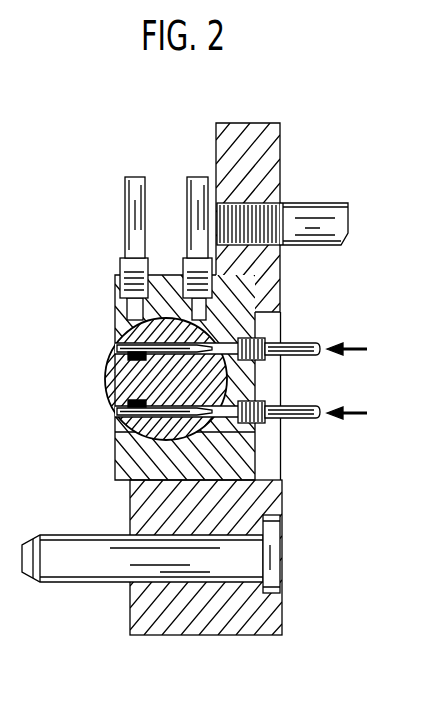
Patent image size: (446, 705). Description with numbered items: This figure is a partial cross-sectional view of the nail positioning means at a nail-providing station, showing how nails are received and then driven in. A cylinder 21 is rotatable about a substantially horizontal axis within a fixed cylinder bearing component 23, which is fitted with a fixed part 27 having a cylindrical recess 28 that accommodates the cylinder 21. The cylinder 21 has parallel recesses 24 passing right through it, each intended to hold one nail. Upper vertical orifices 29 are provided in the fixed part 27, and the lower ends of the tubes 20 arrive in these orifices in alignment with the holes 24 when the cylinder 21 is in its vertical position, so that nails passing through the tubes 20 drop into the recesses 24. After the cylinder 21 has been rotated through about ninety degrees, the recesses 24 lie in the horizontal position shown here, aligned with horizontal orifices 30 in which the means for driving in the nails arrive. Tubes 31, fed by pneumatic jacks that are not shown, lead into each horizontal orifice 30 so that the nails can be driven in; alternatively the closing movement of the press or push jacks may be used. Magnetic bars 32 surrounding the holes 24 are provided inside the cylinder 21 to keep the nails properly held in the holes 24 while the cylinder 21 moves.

The tubes 20 is at (187, 192).
The cylinder 21 is at (137, 378).
The fixed cylinder bearing component 23 is at (283, 611).
The recesses 24 is at (140, 357).
The fixed part 27 is at (148, 455).
The cylindrical recess 28 is at (172, 318).
The upper vertical orifices 29 is at (137, 320).
The horizontal orifices 30 is at (250, 335).
The tubes 31 is at (287, 407).
The magnetic bars 32 is at (140, 396).